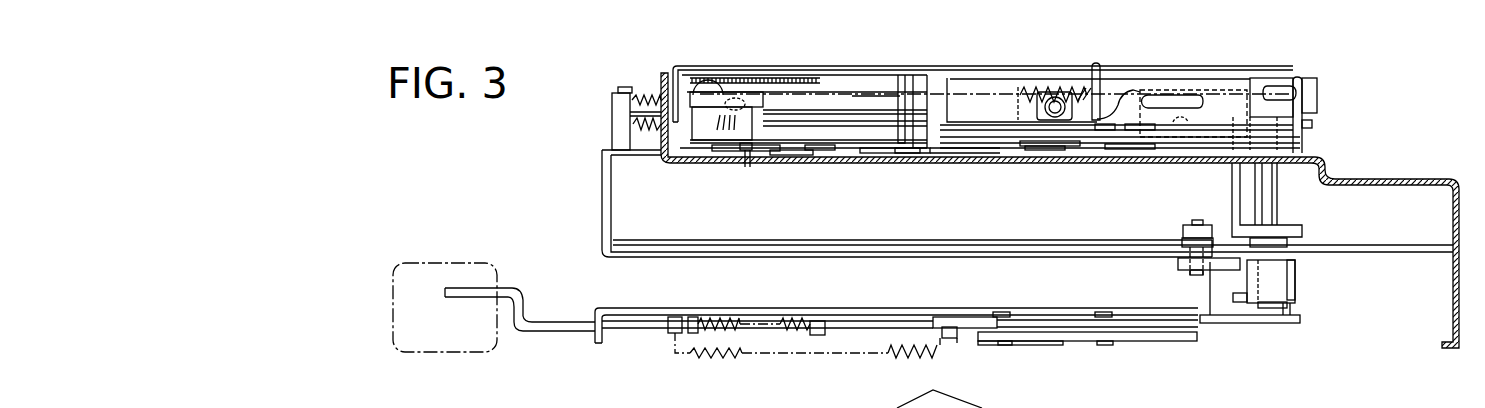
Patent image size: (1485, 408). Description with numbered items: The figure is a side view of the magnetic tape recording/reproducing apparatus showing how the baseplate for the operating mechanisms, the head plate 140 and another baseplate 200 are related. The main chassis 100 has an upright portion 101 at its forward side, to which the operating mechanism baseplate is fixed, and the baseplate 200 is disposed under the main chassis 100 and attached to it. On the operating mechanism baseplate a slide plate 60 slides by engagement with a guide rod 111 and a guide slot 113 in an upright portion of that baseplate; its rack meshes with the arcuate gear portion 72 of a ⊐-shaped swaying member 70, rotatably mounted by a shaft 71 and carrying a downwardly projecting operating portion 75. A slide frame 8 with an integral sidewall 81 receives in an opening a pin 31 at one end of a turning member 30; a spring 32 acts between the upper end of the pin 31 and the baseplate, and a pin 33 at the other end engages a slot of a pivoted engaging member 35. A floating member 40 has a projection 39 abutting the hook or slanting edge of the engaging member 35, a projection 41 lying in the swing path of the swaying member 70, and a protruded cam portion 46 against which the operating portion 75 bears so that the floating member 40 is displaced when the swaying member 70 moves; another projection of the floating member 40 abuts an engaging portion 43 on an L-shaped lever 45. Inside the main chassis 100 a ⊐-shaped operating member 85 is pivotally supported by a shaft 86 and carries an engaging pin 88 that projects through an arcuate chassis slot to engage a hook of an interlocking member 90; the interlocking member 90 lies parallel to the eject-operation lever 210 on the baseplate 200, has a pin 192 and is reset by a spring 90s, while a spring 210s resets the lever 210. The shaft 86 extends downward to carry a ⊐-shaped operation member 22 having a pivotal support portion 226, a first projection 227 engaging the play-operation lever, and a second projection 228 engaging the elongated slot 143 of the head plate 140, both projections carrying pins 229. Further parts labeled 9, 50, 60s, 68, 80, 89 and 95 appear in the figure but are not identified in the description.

The slide frame 8 is at (1000, 145).
The pin 9 is at (1199, 127).
The operation member 22 is at (1327, 309).
The turning member 30 is at (728, 144).
The pin 31 is at (757, 150).
The spring 32 is at (632, 128).
The pin 33 is at (747, 150).
The engaging member 35 is at (712, 154).
The projection 39 is at (780, 150).
The floating member 40 is at (942, 155).
The projection 41 is at (812, 152).
The engaging portion 43 is at (1053, 146).
The L-shaped lever 45 is at (1118, 147).
The cam portion 46 is at (903, 153).
The magnetic head 50 is at (953, 399).
The slide plate 60 is at (963, 68).
The spring 60s is at (642, 90).
The post 68 is at (1093, 68).
The swaying member 70 is at (761, 62).
The shaft 71 is at (905, 100).
The arcuate gear portion 72 is at (771, 77).
The operating portion 75 is at (875, 155).
The pawl 80 is at (1125, 128).
The sidewall 81 is at (1218, 94).
The operating member 85 is at (1232, 188).
The shaft 86 is at (1268, 195).
The engaging pin 88 is at (1284, 287).
The pin 89 is at (1138, 128).
The interlocking member 90 is at (1046, 325).
The resetting spring 90s is at (741, 355).
The stop 95 is at (1103, 130).
The main chassis 100 is at (1032, 252).
The upright portion 101 is at (612, 196).
The guide rod 111 is at (1276, 86).
The guide slot 113 is at (857, 96).
The head plate 140 is at (963, 241).
The elongated slot 143 is at (1177, 250).
The pin 192 is at (947, 340).
The baseplate 200 is at (1023, 318).
The eject-operation lever 210 is at (632, 330).
The spring 210s is at (737, 324).
The pivotal support portion 226 is at (1268, 290).
The first projection 227 is at (1240, 305).
The second projection 228 is at (1218, 266).
The pins 229 is at (1195, 230).